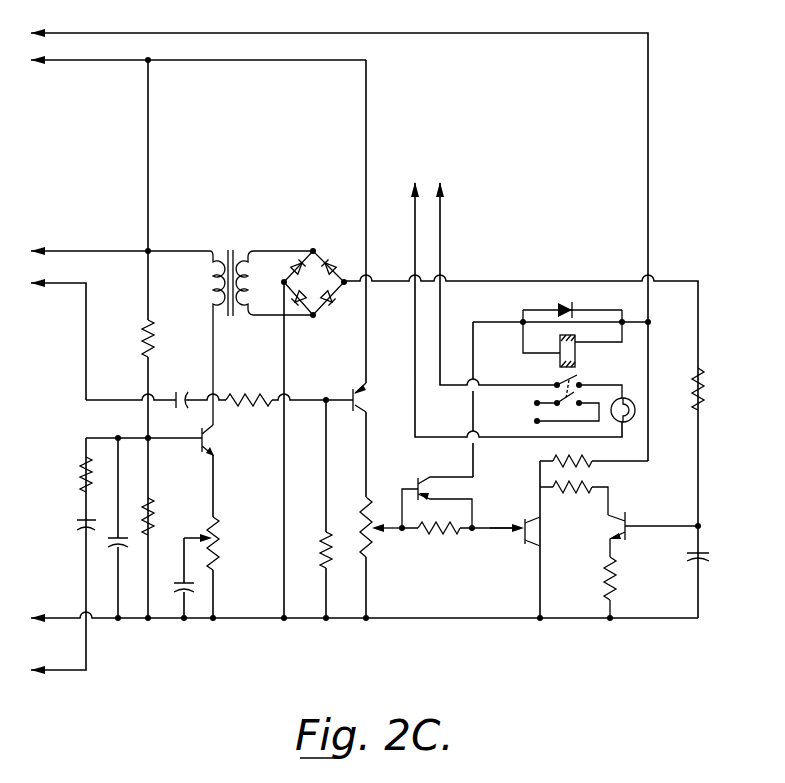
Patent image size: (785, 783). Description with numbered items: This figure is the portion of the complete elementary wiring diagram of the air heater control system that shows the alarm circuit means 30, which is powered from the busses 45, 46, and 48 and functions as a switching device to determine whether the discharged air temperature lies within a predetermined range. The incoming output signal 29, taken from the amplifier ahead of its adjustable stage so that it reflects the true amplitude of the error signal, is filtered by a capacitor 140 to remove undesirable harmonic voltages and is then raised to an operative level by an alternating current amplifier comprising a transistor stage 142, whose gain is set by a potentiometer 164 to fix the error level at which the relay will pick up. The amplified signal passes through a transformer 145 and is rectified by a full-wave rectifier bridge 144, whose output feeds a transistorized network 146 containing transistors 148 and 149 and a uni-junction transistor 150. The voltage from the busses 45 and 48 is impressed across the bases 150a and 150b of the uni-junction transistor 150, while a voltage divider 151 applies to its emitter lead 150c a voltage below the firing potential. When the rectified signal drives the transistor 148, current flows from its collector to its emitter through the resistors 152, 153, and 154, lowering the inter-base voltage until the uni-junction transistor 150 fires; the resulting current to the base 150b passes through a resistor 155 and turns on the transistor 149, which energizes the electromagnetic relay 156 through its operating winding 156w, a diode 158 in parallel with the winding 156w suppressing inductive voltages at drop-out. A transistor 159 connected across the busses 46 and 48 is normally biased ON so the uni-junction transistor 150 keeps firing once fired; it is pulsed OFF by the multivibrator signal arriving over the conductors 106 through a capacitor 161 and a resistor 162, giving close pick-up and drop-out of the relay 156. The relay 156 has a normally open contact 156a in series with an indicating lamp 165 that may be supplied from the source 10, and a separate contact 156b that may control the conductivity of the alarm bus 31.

The bus 45 is at (143, 10).
The bus 46 is at (121, 60).
The alarm circuit means 30 is at (272, 160).
The conductors 106 is at (122, 253).
The transformer 145 is at (238, 243).
The full-wave rectifier bridge 144 is at (320, 293).
The source 10 is at (510, 297).
The capacitor 161 is at (192, 385).
The resistor 162 is at (266, 385).
The transistor 159 is at (358, 401).
The transistor stage 142 is at (197, 482).
The potentiometer 164 is at (222, 533).
The capacitor 140 is at (130, 541).
The bus 48 is at (78, 600).
The output signal 29 is at (80, 622).
The transistorized network 146 is at (422, 476).
The voltage divider 151 is at (372, 548).
The transistor 149 is at (440, 490).
The resistor 155 is at (441, 548).
The uni-junction transistor 150 is at (518, 542).
The base 150a is at (536, 522).
The base 150b is at (533, 548).
The emitter lead 150c is at (518, 536).
The resistor 152 is at (598, 464).
The resistor 153 is at (568, 492).
The transistor 148 is at (636, 520).
The resistor 154 is at (620, 578).
The diode 158 is at (578, 312).
The operating winding 156w is at (578, 351).
The electromagnetic relay 156 is at (582, 379).
The normally open contact 156a is at (562, 380).
The contact 156b is at (552, 412).
The alarm bus 31 is at (546, 424).
The indicating lamp 165 is at (633, 421).